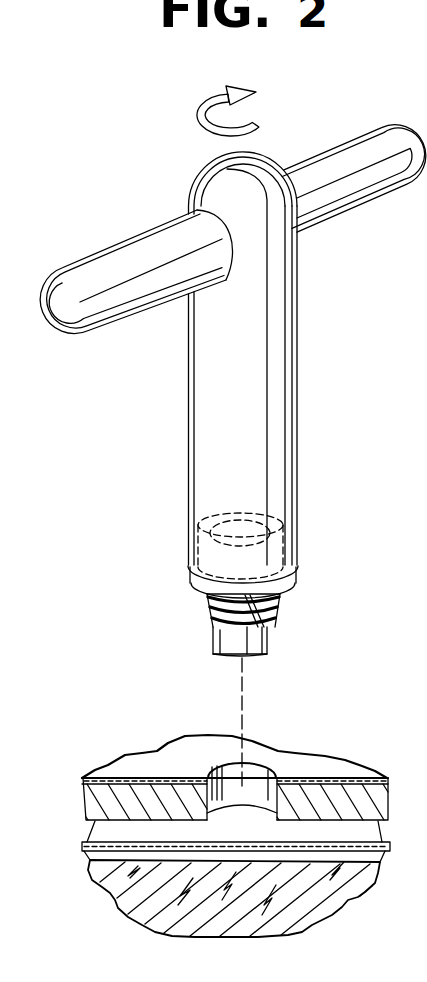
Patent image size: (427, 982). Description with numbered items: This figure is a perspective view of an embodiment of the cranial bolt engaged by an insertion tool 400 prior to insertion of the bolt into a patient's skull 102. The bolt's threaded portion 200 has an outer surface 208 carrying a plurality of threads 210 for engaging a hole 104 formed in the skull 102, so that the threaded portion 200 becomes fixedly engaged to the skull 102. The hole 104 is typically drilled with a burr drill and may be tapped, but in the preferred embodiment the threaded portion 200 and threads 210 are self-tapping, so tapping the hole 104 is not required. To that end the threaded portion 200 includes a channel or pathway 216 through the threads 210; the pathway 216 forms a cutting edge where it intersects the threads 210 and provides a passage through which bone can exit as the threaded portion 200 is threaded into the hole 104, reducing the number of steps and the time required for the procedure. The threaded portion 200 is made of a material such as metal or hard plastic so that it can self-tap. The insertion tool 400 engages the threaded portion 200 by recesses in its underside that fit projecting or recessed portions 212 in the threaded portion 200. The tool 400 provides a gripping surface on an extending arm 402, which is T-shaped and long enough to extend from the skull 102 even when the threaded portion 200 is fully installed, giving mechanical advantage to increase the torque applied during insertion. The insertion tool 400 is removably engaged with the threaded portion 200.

The insertion tool 400 is at (351, 131).
The extending arm 402 is at (283, 335).
The projecting or recessed portions 212 is at (302, 541).
The outer surface 208 is at (206, 613).
The threads 210 is at (272, 597).
The channel or pathway 216 is at (266, 633).
The threaded portion 200 is at (212, 634).
The hole 104 is at (222, 776).
The skull 102 is at (338, 768).